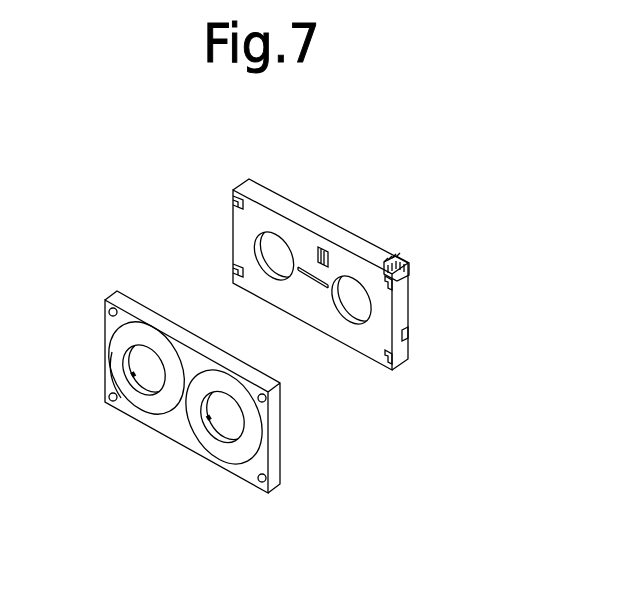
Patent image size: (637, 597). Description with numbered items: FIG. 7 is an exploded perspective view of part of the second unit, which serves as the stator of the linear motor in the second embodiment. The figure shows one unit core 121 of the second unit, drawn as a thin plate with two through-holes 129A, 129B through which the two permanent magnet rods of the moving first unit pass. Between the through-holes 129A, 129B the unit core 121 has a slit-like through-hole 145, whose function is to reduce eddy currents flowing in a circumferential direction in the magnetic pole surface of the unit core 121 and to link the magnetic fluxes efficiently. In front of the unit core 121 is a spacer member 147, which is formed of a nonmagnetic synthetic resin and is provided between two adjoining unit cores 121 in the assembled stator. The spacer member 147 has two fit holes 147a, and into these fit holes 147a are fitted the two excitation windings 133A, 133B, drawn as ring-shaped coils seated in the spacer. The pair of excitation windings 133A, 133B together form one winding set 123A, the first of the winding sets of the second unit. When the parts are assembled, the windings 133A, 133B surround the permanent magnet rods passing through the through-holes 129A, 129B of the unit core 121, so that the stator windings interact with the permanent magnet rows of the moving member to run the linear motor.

The unit core 121 is at (243, 227).
The through-hole 129A is at (261, 283).
The through-hole 129B is at (348, 327).
The slit-like through-hole 145 is at (318, 288).
The spacer member 147 is at (146, 303).
The fit hole 147a is at (118, 372).
The excitation winding 133A is at (123, 343).
The excitation winding 133B is at (247, 428).
The winding set 123A is at (165, 406).